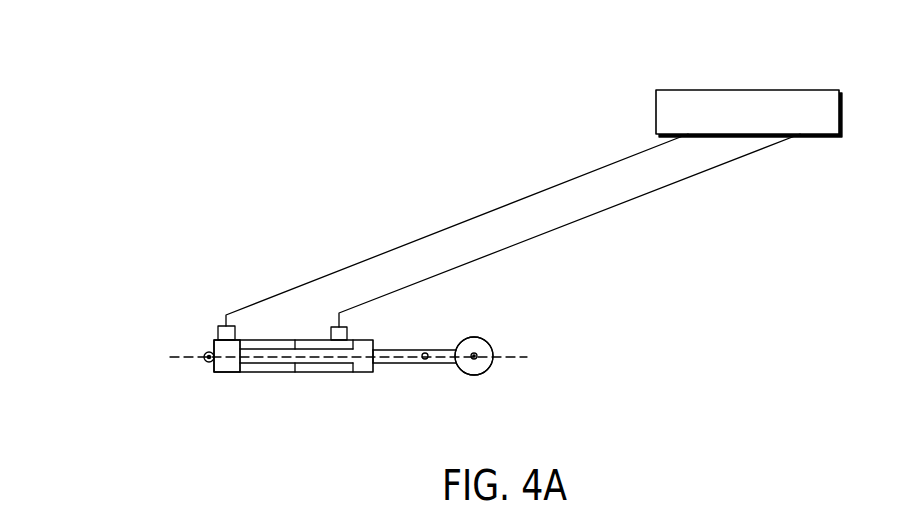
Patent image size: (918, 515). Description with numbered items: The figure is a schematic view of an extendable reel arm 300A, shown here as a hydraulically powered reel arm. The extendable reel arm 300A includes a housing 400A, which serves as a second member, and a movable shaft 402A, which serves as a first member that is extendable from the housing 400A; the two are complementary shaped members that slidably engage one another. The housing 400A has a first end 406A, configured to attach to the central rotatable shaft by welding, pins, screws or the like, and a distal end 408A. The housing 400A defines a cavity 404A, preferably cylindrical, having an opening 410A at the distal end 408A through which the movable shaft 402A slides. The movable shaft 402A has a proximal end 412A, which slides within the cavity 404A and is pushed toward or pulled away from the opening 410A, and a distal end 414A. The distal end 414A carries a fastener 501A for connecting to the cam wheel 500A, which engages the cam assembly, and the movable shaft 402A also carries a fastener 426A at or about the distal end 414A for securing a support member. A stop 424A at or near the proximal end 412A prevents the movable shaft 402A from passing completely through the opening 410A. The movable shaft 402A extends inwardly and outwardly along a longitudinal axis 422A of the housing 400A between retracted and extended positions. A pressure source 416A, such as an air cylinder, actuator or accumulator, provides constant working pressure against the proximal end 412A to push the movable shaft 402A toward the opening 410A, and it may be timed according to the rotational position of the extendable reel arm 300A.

The extendable reel arm 300A is at (176, 260).
The housing 400A is at (305, 340).
The movable shaft 402A is at (453, 350).
The cavity 404A is at (250, 383).
The first end 406A is at (200, 380).
The distal end 408A is at (356, 384).
The opening 410A is at (388, 374).
The proximal end 412A is at (246, 330).
The distal end 414A is at (455, 383).
The pressure source 416A is at (757, 90).
The longitudinal axis 422A is at (175, 356).
The stop 424A is at (214, 370).
The fastener 426A is at (425, 352).
The cam wheel 500A is at (483, 343).
The fastener 501A is at (493, 342).